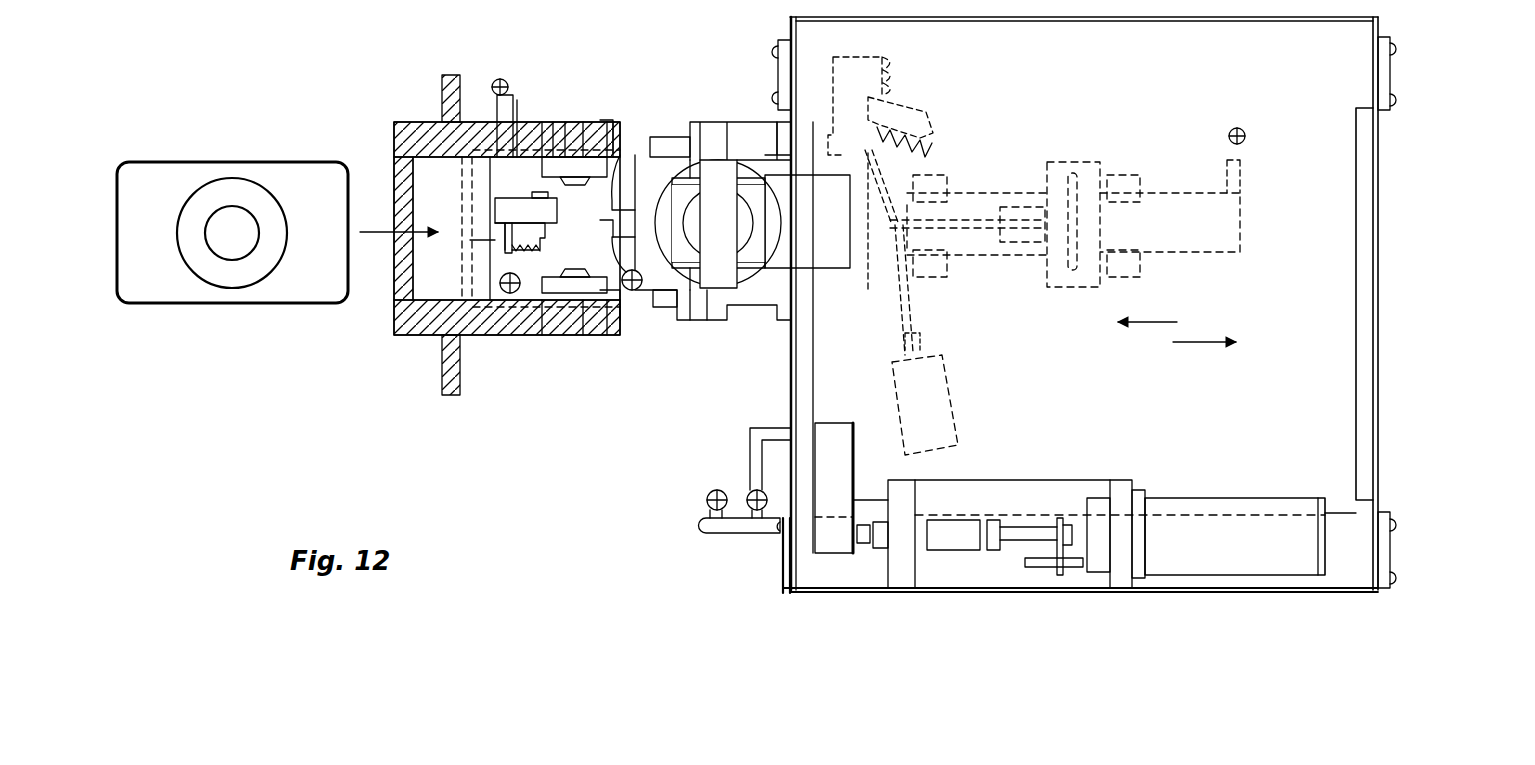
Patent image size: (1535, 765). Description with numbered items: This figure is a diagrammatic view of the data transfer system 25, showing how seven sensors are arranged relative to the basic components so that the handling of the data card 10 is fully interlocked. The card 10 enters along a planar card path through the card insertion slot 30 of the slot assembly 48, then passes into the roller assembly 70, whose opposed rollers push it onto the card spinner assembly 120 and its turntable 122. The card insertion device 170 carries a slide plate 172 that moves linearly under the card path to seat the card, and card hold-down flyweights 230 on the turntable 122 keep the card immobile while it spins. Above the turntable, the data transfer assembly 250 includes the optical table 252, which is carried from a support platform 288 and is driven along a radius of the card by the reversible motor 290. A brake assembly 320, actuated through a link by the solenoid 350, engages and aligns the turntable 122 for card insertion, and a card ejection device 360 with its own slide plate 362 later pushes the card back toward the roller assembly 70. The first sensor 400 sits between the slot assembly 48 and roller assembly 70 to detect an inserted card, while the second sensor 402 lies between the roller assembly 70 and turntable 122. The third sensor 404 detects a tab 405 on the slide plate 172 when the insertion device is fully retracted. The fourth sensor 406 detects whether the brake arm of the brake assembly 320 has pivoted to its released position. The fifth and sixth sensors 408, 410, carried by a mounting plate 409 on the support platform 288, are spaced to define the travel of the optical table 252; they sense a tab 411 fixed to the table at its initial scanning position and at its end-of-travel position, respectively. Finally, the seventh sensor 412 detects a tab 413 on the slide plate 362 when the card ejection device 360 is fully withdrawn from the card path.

The data card 10 is at (268, 312).
The data transfer system 25 is at (582, 76).
The card insertion slot 30 is at (421, 275).
The slot assembly 48 is at (428, 330).
The roller assembly 70 is at (556, 152).
The card spinner assembly 120 is at (697, 118).
The turntable 122 is at (658, 295).
The card insertion device 170 is at (528, 262).
The slide plate 172 is at (636, 152).
The card hold-down flyweights 230 is at (690, 137).
The data transfer assembly 250 is at (1405, 255).
The optical table 252 is at (1297, 442).
The support platform 288 is at (1238, 578).
The reversible motor 290 is at (1193, 560).
The brake assembly 320 is at (933, 123).
The solenoid 350 is at (950, 392).
The card ejection device 360 is at (1012, 190).
The slide plate 362 is at (1085, 290).
The first sensor 400 is at (508, 295).
The second sensor 402 is at (636, 293).
The third sensor 404 is at (492, 80).
The tab 405 is at (517, 100).
The fourth sensor 406 is at (812, 120).
The fifth sensor 408 is at (703, 505).
The mounting plate 409 is at (729, 538).
The sixth sensor 410 is at (757, 535).
The tab 411 is at (750, 452).
The seventh sensor 412 is at (1236, 125).
The tab 413 is at (1246, 150).